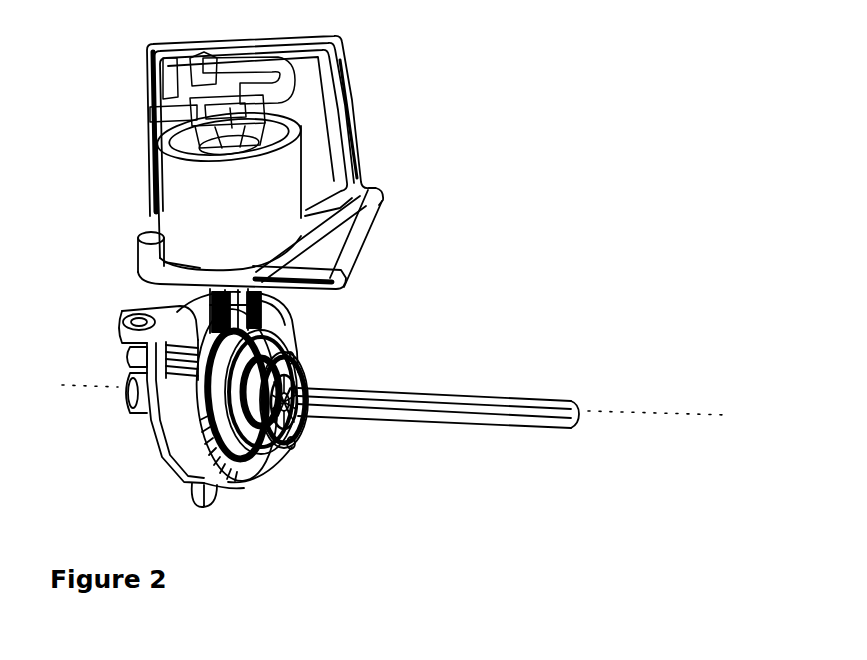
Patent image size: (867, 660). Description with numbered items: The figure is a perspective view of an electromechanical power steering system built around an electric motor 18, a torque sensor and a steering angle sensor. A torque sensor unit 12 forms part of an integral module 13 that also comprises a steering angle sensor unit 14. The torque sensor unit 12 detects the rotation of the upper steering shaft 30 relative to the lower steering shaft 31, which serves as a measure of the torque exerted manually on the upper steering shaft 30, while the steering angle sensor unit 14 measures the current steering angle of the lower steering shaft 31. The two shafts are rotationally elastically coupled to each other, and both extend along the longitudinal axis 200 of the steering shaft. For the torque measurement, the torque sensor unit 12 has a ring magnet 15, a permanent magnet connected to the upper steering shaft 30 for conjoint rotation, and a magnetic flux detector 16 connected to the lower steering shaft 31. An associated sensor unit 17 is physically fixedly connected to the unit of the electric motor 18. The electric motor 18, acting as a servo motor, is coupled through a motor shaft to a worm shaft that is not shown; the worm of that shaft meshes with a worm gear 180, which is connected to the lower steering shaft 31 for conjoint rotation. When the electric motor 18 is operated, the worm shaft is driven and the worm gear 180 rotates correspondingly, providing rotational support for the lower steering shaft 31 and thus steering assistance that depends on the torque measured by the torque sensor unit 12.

The torque sensor unit 12 is at (297, 360).
The integral module 13 is at (292, 337).
The steering angle sensor unit 14 is at (315, 372).
The ring magnet 15 is at (297, 423).
The magnetic flux detector 16 is at (295, 445).
The sensor unit 17 is at (277, 450).
The electric motor 18 is at (283, 167).
The upper steering shaft 30 is at (457, 390).
The lower steering shaft 31 is at (137, 402).
The worm gear 180 is at (237, 487).
The longitudinal axis 200 is at (650, 418).